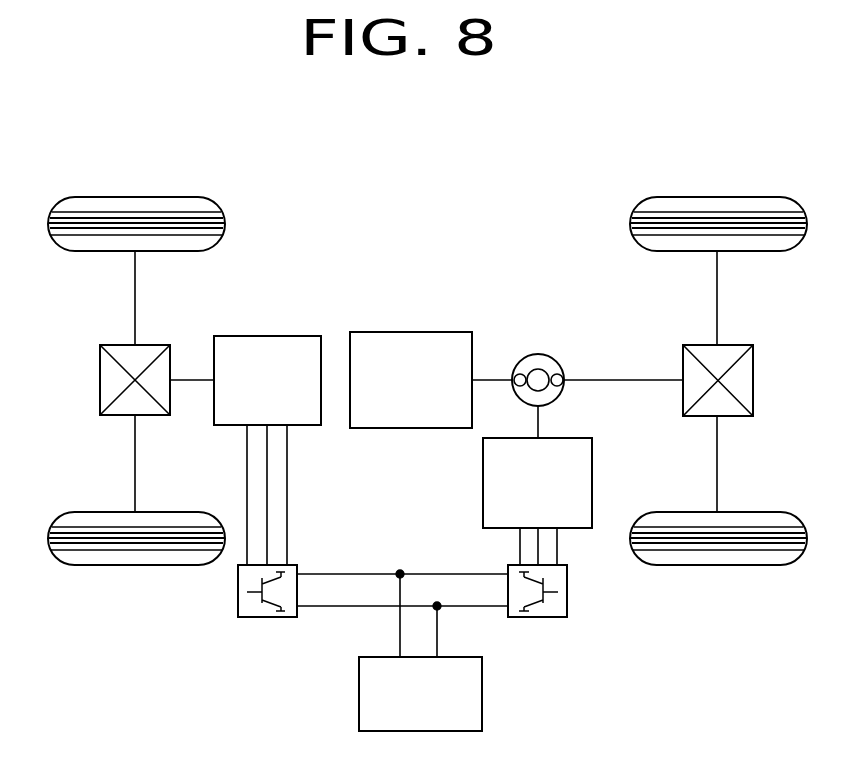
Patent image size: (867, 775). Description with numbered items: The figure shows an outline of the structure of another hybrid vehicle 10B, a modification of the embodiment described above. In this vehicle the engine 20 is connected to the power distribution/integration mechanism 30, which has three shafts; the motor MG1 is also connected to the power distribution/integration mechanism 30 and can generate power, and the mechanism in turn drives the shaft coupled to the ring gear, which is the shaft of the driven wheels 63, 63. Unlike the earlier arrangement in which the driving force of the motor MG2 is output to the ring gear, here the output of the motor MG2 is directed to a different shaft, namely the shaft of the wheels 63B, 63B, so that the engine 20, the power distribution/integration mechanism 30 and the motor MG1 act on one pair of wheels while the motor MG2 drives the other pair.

The hybrid vehicle 10B is at (421, 173).
The wheels 63B is at (135, 197).
The driven wheels 63 is at (717, 197).
The motor MG2 is at (267, 336).
The engine 20 is at (410, 332).
The power distribution/integration mechanism 30 is at (538, 355).
The motor MG1 is at (483, 482).